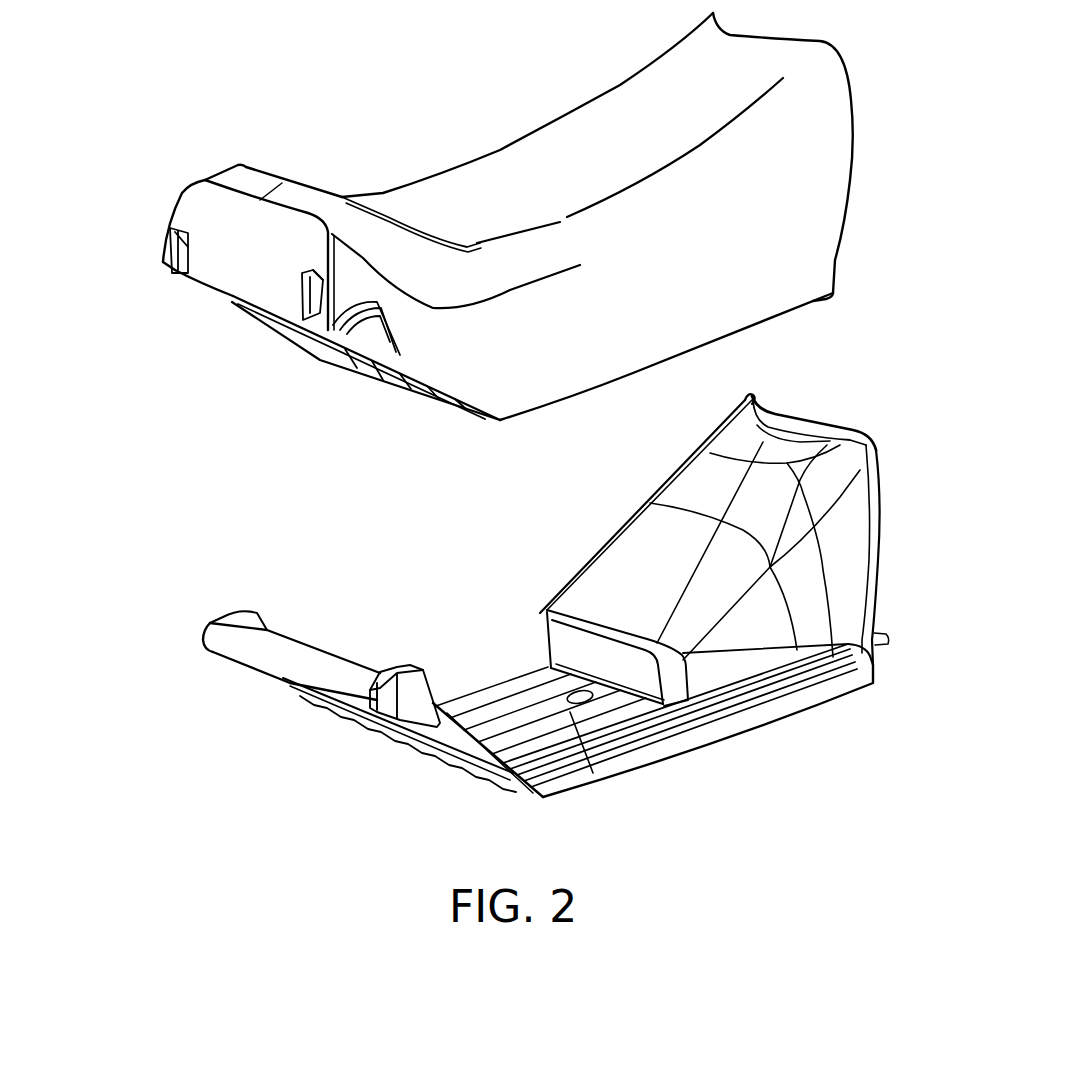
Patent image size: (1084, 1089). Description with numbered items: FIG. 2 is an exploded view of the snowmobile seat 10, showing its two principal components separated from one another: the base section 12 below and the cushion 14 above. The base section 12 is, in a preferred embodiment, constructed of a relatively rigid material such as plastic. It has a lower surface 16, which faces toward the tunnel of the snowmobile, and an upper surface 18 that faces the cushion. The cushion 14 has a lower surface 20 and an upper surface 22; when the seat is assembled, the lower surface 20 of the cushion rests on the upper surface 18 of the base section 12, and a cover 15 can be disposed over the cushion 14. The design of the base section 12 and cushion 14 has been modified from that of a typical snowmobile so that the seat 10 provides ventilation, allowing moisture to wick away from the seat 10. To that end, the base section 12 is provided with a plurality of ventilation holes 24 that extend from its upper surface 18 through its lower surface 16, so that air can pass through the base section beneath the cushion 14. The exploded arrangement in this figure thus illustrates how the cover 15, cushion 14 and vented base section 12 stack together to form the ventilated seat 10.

The snowmobile seat 10 is at (152, 454).
The base section 12 is at (790, 456).
The cushion 14 is at (583, 97).
The cover 15 is at (742, 63).
The lower surface 16 is at (844, 714).
The upper surface 18 is at (527, 720).
The lower surface 20 is at (432, 399).
The upper surface 22 is at (543, 201).
The ventilation holes 24 is at (482, 679).